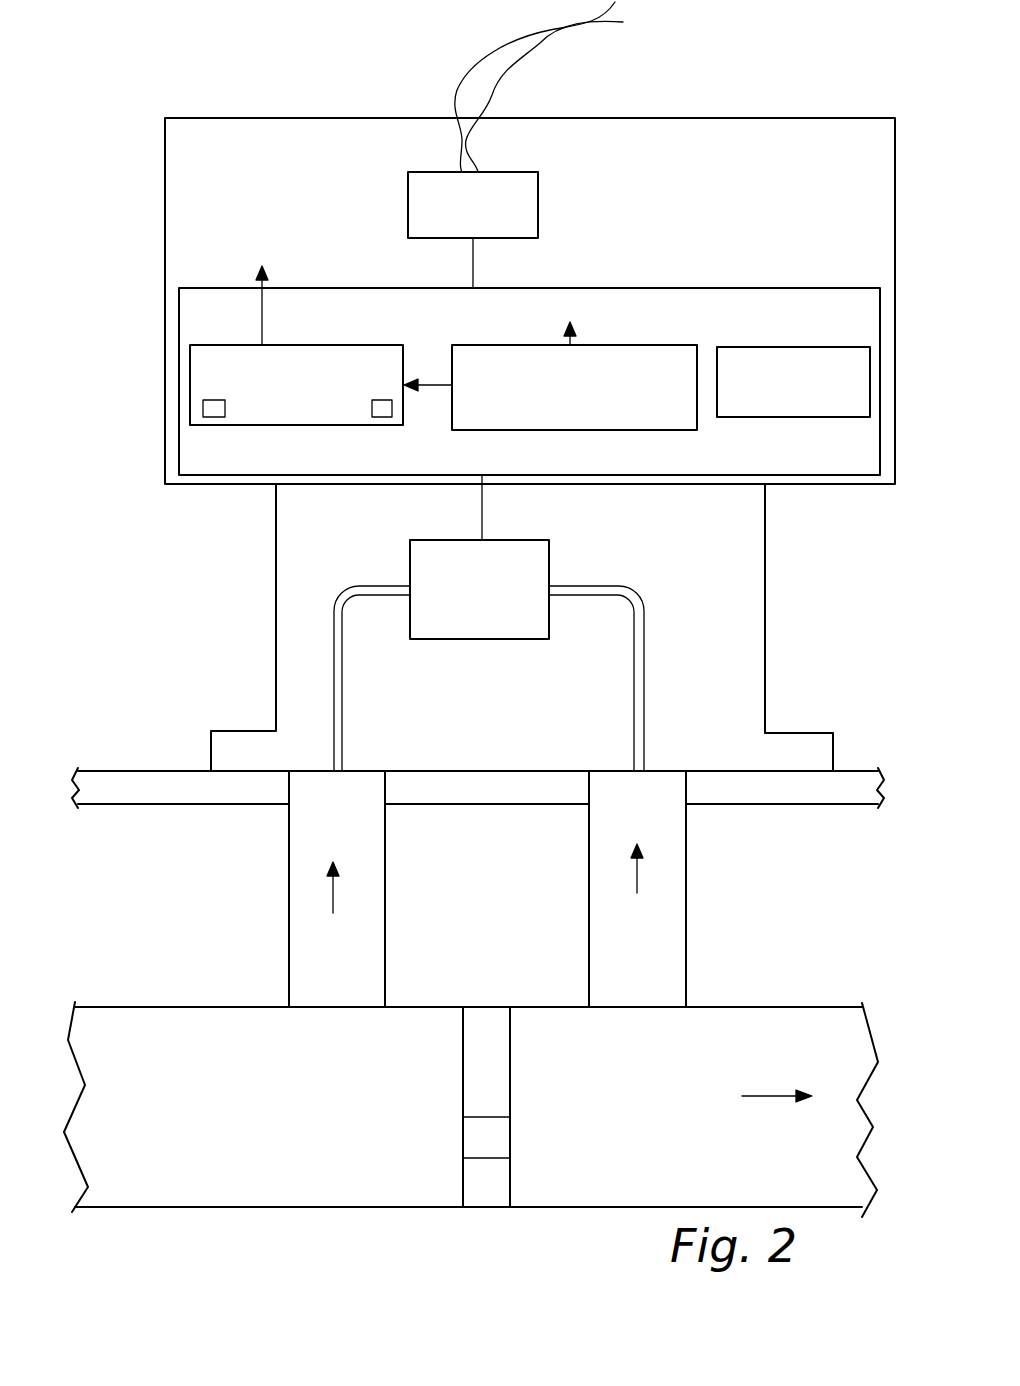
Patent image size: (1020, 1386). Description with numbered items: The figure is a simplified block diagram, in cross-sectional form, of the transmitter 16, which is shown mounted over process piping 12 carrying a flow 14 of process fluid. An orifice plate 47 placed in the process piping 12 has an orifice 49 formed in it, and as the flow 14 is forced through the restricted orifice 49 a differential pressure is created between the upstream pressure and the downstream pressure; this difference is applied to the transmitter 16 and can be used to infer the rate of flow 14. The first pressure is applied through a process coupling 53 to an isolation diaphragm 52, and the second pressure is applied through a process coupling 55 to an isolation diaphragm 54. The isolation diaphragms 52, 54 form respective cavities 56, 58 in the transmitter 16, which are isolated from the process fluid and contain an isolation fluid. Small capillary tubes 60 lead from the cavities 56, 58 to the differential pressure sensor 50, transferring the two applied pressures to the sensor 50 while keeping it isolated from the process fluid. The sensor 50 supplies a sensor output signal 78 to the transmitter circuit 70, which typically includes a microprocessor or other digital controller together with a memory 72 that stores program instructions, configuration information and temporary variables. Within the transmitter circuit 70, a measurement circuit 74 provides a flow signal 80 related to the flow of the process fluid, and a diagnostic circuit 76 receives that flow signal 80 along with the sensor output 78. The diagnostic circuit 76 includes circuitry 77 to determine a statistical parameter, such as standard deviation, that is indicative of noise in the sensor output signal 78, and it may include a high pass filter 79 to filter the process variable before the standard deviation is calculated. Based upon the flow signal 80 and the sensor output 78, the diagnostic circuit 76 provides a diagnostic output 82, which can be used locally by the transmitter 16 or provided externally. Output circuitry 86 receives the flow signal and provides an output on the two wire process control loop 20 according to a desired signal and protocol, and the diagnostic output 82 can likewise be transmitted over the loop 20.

The process piping 12 is at (735, 1007).
The flow 14 is at (777, 1084).
The transmitter 16 is at (275, 118).
The two wire process control loop 20 is at (507, 77).
The orifice plate 47 is at (510, 1063).
The orifice 49 is at (488, 1131).
The differential pressure sensor 50 is at (549, 548).
The isolation diaphragm 52 is at (318, 771).
The process coupling 53 is at (396, 853).
The isolation diaphragm 54 is at (655, 771).
The process coupling 55 is at (588, 917).
The cavity 56 is at (357, 773).
The cavity 58 is at (618, 768).
The capillary tube 60 is at (360, 666).
The transmitter circuit 70 is at (179, 342).
The memory 72 is at (790, 347).
The measurement circuit 74 is at (650, 430).
The diagnostic circuit 76 is at (202, 403).
The circuitry 77 is at (385, 417).
The sensor output signal 78 is at (482, 497).
The high pass filter 79 is at (217, 417).
The flow signal 80 is at (436, 438).
The diagnostic output 82 is at (262, 318).
The output circuitry 86 is at (538, 198).